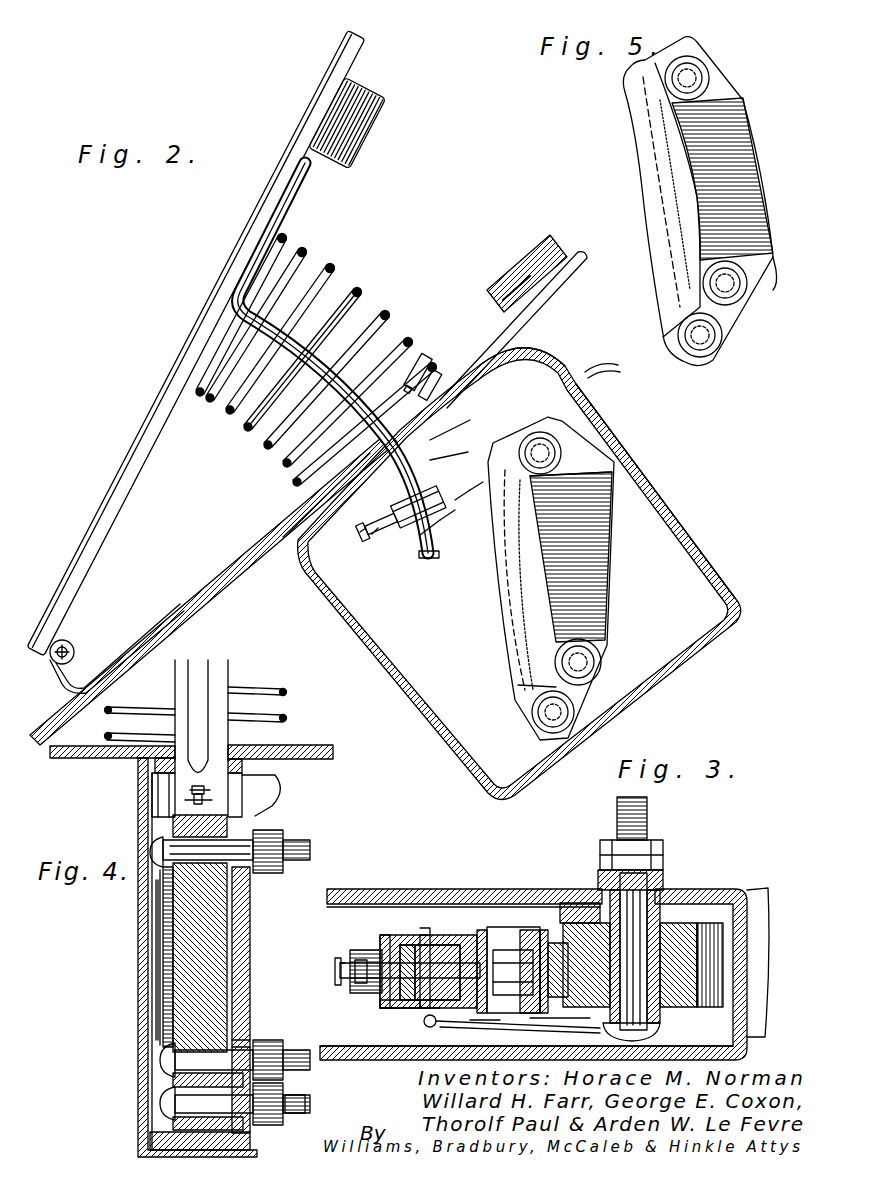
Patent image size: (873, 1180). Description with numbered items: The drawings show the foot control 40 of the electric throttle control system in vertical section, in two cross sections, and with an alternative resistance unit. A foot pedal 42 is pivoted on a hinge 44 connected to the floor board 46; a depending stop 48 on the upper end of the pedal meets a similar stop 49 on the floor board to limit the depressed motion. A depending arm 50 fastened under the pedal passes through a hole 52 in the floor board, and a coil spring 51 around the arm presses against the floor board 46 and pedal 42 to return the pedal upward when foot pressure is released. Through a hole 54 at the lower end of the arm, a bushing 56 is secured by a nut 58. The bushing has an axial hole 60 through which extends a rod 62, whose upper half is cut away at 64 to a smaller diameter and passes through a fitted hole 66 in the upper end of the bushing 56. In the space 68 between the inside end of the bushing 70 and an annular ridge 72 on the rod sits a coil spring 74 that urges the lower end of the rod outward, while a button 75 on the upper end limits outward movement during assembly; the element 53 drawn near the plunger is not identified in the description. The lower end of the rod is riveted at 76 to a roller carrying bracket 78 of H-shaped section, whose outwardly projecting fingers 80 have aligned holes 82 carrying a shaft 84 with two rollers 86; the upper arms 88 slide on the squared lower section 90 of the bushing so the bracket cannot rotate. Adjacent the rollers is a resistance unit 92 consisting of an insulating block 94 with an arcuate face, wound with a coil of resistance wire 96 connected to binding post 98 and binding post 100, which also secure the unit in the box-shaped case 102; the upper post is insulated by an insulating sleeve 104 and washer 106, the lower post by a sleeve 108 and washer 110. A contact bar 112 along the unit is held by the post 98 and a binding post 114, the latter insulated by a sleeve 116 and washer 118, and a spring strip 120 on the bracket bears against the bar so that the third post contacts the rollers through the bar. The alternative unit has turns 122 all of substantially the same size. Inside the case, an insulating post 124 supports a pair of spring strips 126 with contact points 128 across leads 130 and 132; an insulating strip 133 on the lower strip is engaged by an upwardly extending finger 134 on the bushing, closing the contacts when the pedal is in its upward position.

In FIG. 2, the foot control 40 is at (314, 621).
In FIG. 2, the foot pedal 42 is at (150, 423).
In FIG. 2, the hinge 44 is at (68, 686).
In FIG. 2, the floor board 46 is at (235, 597).
In FIG. 4, the floor board 46 is at (318, 745).
In FIG. 2, the depending stop 48 is at (385, 112).
In FIG. 2, the stop 49 is at (548, 242).
In FIG. 2, the depending arm 50 is at (338, 300).
In FIG. 4, the depending arm 50 is at (210, 672).
In FIG. 2, the coil spring 51 is at (355, 315).
In FIG. 4, the coil spring 51 is at (283, 690).
In FIG. 2, the hole 52 is at (326, 495).
In FIG. 2, the plunger 53 is at (410, 545).
In FIG. 3, the hole 54 is at (430, 1012).
In FIG. 2, the bushing 56 is at (385, 550).
In FIG. 3, the bushing 56 is at (440, 925).
In FIG. 3, the nut 58 is at (390, 1012).
In FIG. 3, the axial hole 60 is at (400, 930).
In FIG. 3, the rod 62 is at (380, 1008).
In FIG. 3, the cut-away portion 64 is at (407, 971).
In FIG. 3, the hole 66 is at (355, 965).
In FIG. 3, the space 68 is at (430, 930).
In FIG. 3, the inside end of the bushing 70 is at (360, 940).
In FIG. 3, the annular ridge 72 is at (431, 956).
In FIG. 3, the coil spring 74 is at (392, 956).
In FIG. 2, the button 75 is at (372, 540).
In FIG. 3, the button 75 is at (333, 965).
In FIG. 3, the rivet 76 is at (483, 927).
In FIG. 2, the roller carrying bracket 78 is at (468, 500).
In FIG. 3, the roller carrying bracket 78 is at (544, 927).
In FIG. 3, the outwardly projecting fingers 80 is at (560, 940).
In FIG. 3, the aligned holes 82 is at (513, 958).
In FIG. 3, the shaft 84 is at (525, 1030).
In FIG. 2, the rollers 86 is at (483, 495).
In FIG. 3, the rollers 86 is at (550, 940).
In FIG. 2, the upper arms 88 is at (440, 540).
In FIG. 3, the upper arms 88 is at (410, 1058).
In FIG. 3, the lower section 90 is at (428, 1027).
In FIG. 2, the resistance unit 92 is at (600, 570).
In FIG. 3, the resistance unit 92 is at (705, 920).
In FIG. 4, the resistance unit 92 is at (230, 928).
In FIG. 5, the block 94 is at (735, 86).
In FIG. 3, the block 94 is at (748, 925).
In FIG. 4, the block 94 is at (162, 985).
In FIG. 2, the coil of resistance wire 96 is at (615, 490).
In FIG. 5, the coil of resistance wire 96 is at (750, 130).
In FIG. 3, the coil of resistance wire 96 is at (710, 920).
In FIG. 4, the coil of resistance wire 96 is at (160, 955).
In FIG. 2, the binding post 98 is at (560, 445).
In FIG. 5, the binding post 98 is at (708, 70).
In FIG. 3, the binding post 98 is at (650, 812).
In FIG. 4, the binding post 98 is at (150, 848).
In FIG. 2, the binding post 100 is at (603, 660).
In FIG. 5, the binding post 100 is at (730, 305).
In FIG. 4, the binding post 100 is at (157, 1062).
In FIG. 2, the case 102 is at (740, 548).
In FIG. 3, the case 102 is at (745, 892).
In FIG. 4, the case 102 is at (131, 1015).
In FIG. 4, the insulating sleeve 104 is at (230, 812).
In FIG. 3, the washer 106 is at (663, 870).
In FIG. 4, the washer 106 is at (228, 830).
In FIG. 4, the sleeve 108 is at (250, 1040).
In FIG. 4, the washer 110 is at (250, 1047).
In FIG. 2, the contact bar 112 is at (506, 632).
In FIG. 5, the contact bar 112 is at (662, 218).
In FIG. 3, the contact bar 112 is at (560, 1019).
In FIG. 4, the contact bar 112 is at (155, 908).
In FIG. 2, the binding post 114 is at (530, 735).
In FIG. 5, the binding post 114 is at (710, 352).
In FIG. 4, the binding post 114 is at (157, 1115).
In FIG. 4, the sleeve 116 is at (252, 1141).
In FIG. 4, the washer 118 is at (304, 1094).
In FIG. 2, the spring strip 120 is at (462, 520).
In FIG. 3, the spring strip 120 is at (482, 1024).
In FIG. 5, the turns 122 is at (774, 283).
In FIG. 2, the insulating post 124 is at (520, 360).
In FIG. 2, the spring strips 126 is at (450, 365).
In FIG. 4, the spring strips 126 is at (190, 790).
In FIG. 2, the contact points 128 is at (450, 368).
In FIG. 4, the contact points 128 is at (192, 792).
In FIG. 2, the lead 130 is at (603, 361).
In FIG. 2, the lead 132 is at (600, 376).
In FIG. 2, the insulating strip 133 is at (453, 435).
In FIG. 4, the insulating strip 133 is at (194, 800).
In FIG. 2, the finger 134 is at (451, 462).
In FIG. 4, the finger 134 is at (278, 778).